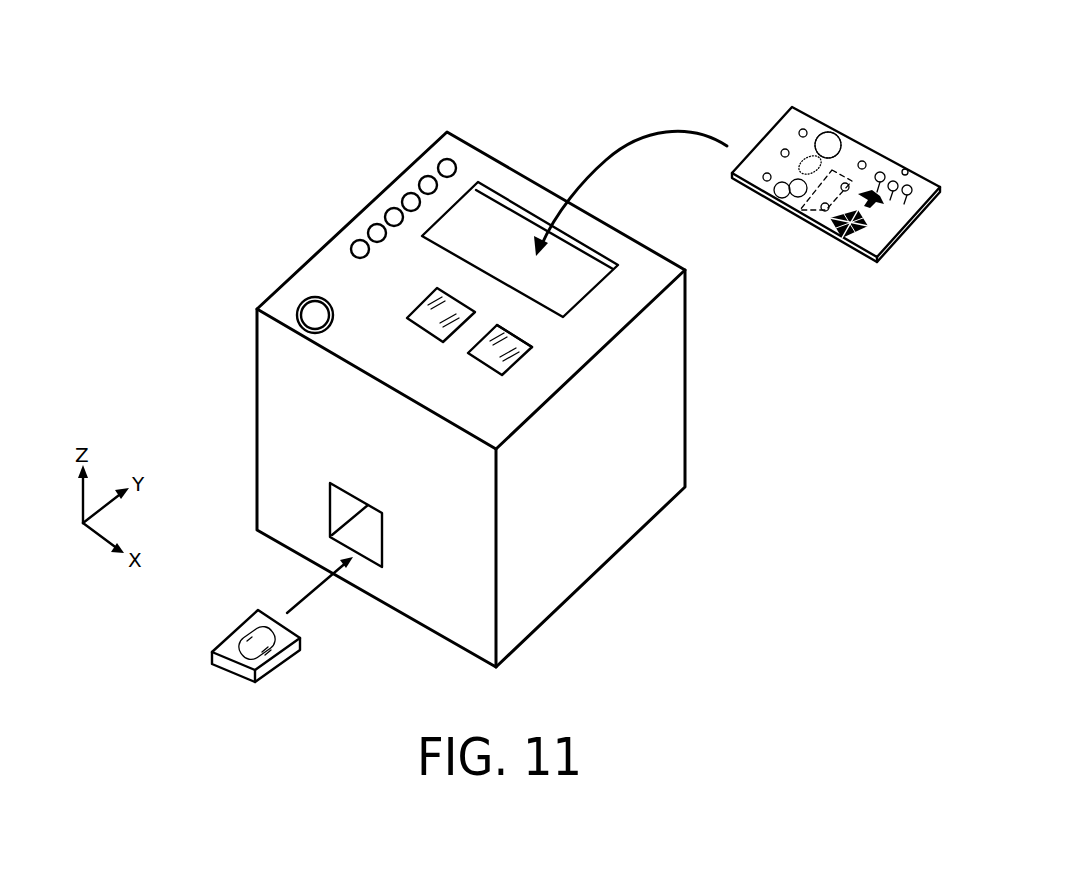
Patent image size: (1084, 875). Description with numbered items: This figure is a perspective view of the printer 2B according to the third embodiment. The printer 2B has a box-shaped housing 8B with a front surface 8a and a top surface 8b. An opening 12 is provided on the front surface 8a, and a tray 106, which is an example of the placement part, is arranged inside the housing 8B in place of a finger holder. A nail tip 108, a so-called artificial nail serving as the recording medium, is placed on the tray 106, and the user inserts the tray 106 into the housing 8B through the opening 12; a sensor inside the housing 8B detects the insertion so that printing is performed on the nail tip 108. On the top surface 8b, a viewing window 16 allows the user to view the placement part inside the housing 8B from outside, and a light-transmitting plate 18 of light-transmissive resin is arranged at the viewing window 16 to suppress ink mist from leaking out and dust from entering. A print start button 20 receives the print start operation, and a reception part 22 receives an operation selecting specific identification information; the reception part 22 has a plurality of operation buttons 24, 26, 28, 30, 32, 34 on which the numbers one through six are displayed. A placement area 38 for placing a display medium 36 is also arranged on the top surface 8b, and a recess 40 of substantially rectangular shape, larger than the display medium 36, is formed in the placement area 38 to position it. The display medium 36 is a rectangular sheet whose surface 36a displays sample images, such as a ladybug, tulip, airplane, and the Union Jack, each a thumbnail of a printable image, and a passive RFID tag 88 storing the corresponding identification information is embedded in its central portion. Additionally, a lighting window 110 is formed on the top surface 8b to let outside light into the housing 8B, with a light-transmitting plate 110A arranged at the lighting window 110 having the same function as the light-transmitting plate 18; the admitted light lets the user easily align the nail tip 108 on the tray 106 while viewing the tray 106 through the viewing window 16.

The printer 2B is at (543, 116).
The front surface 8a is at (262, 403).
The top surface 8b is at (654, 266).
The housing 8B is at (677, 410).
The opening 12 is at (333, 487).
The viewing window 16 is at (359, 304).
The light-transmitting plate 18 is at (421, 326).
The print start button 20 is at (312, 313).
The reception part 22 is at (294, 45).
The operation button 24 is at (438, 162).
The operation button 26 is at (420, 178).
The operation button 28 is at (403, 195).
The operation button 30 is at (386, 210).
The operation button 32 is at (370, 226).
The operation button 34 is at (354, 242).
The display medium 36 is at (836, 168).
The surface 36a is at (820, 133).
The placement area 38 is at (493, 222).
The recess 40 is at (559, 241).
The RFID tag 88 is at (803, 207).
The tray 106 is at (273, 623).
The nail tip 108 is at (243, 637).
The lighting window 110 is at (526, 369).
The light-transmitting plate 110A is at (556, 349).